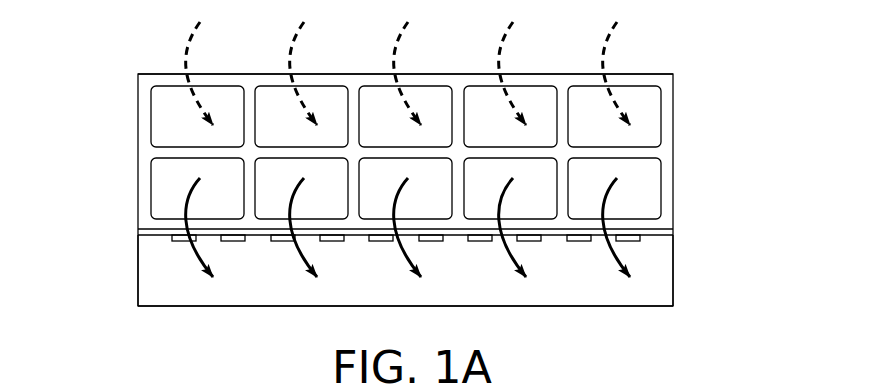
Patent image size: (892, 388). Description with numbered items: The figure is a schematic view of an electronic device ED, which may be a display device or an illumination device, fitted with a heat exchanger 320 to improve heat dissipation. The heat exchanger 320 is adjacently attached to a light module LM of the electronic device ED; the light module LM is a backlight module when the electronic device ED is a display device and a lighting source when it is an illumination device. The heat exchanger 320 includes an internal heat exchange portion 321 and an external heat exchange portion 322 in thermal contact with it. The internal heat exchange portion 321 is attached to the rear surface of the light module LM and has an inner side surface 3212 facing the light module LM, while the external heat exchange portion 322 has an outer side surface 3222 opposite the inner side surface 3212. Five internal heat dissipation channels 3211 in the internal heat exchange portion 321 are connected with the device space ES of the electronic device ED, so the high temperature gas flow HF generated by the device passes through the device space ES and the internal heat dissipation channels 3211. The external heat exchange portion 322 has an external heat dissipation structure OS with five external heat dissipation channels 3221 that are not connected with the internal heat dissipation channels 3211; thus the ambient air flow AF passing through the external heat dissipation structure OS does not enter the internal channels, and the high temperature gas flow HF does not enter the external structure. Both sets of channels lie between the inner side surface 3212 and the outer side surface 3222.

The heat exchanger 320 is at (427, 152).
The internal heat exchange portion 321 is at (395, 188).
The external heat exchange portion 322 is at (395, 116).
The internal heat dissipation channel 3211 is at (165, 190).
The inner side surface 3212 is at (458, 232).
The external heat dissipation channel 3221 is at (165, 123).
The outer side surface 3222 is at (452, 73).
The ambient air flow AF is at (188, 43).
The external heat dissipation structure OS is at (133, 85).
The high temperature gas flow HF is at (188, 250).
The device space ES is at (277, 290).
The light module LM is at (665, 233).
The electronic device ED is at (677, 290).